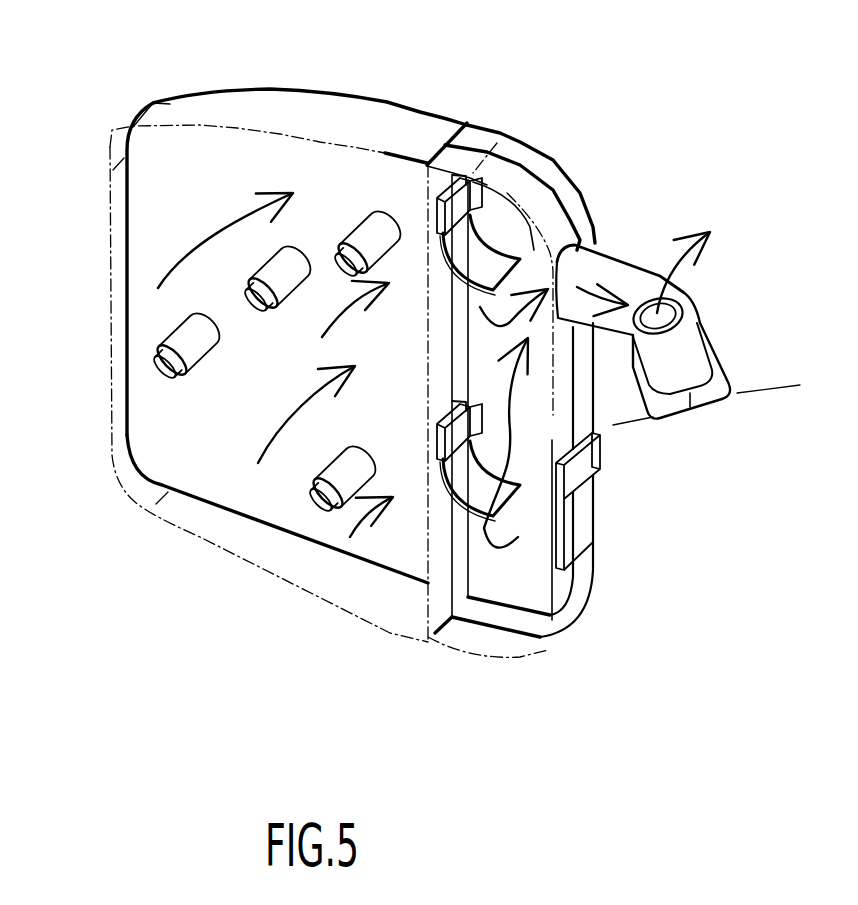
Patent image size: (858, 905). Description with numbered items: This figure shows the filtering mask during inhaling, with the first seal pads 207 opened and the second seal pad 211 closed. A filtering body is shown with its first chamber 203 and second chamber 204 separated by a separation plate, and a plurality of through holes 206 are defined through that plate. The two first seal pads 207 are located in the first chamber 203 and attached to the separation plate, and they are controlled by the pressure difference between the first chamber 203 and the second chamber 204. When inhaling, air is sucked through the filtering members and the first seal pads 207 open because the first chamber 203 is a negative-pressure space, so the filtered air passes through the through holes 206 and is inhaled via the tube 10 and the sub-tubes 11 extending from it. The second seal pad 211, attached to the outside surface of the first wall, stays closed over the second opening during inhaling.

The tube 10 is at (597, 257).
The sub-tubes 11 is at (673, 353).
The first chamber 203 is at (513, 590).
The second chamber 204 is at (183, 146).
The through holes 206 is at (437, 263).
The first seal pads 207 is at (482, 262).
The second seal pad 211 is at (573, 520).